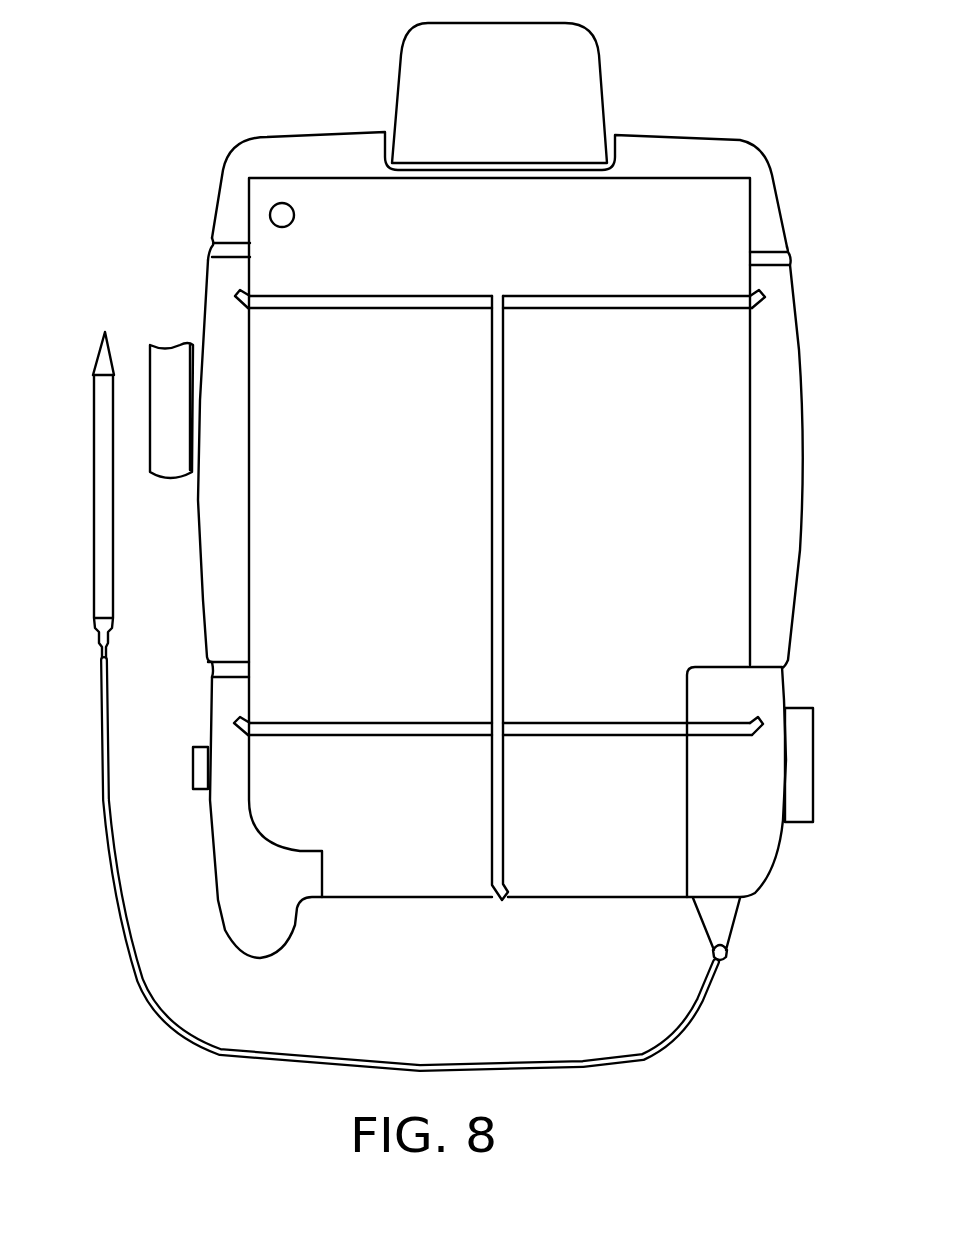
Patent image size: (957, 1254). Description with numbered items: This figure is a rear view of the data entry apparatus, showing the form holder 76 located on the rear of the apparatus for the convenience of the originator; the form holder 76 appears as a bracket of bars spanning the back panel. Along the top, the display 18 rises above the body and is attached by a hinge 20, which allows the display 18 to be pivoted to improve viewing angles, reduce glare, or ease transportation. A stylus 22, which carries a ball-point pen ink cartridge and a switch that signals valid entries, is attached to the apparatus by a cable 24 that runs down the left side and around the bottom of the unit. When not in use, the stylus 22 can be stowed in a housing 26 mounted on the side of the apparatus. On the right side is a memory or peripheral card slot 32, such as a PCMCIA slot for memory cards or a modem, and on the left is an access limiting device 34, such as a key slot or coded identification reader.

The display 18 is at (602, 110).
The hinge 20 is at (385, 143).
The stylus 22 is at (97, 497).
The cable 24 is at (583, 1066).
The housing 26 is at (180, 345).
The memory or peripheral card slot 32 is at (815, 770).
The access limiting device 34 is at (192, 763).
The form holder 76 is at (757, 310).